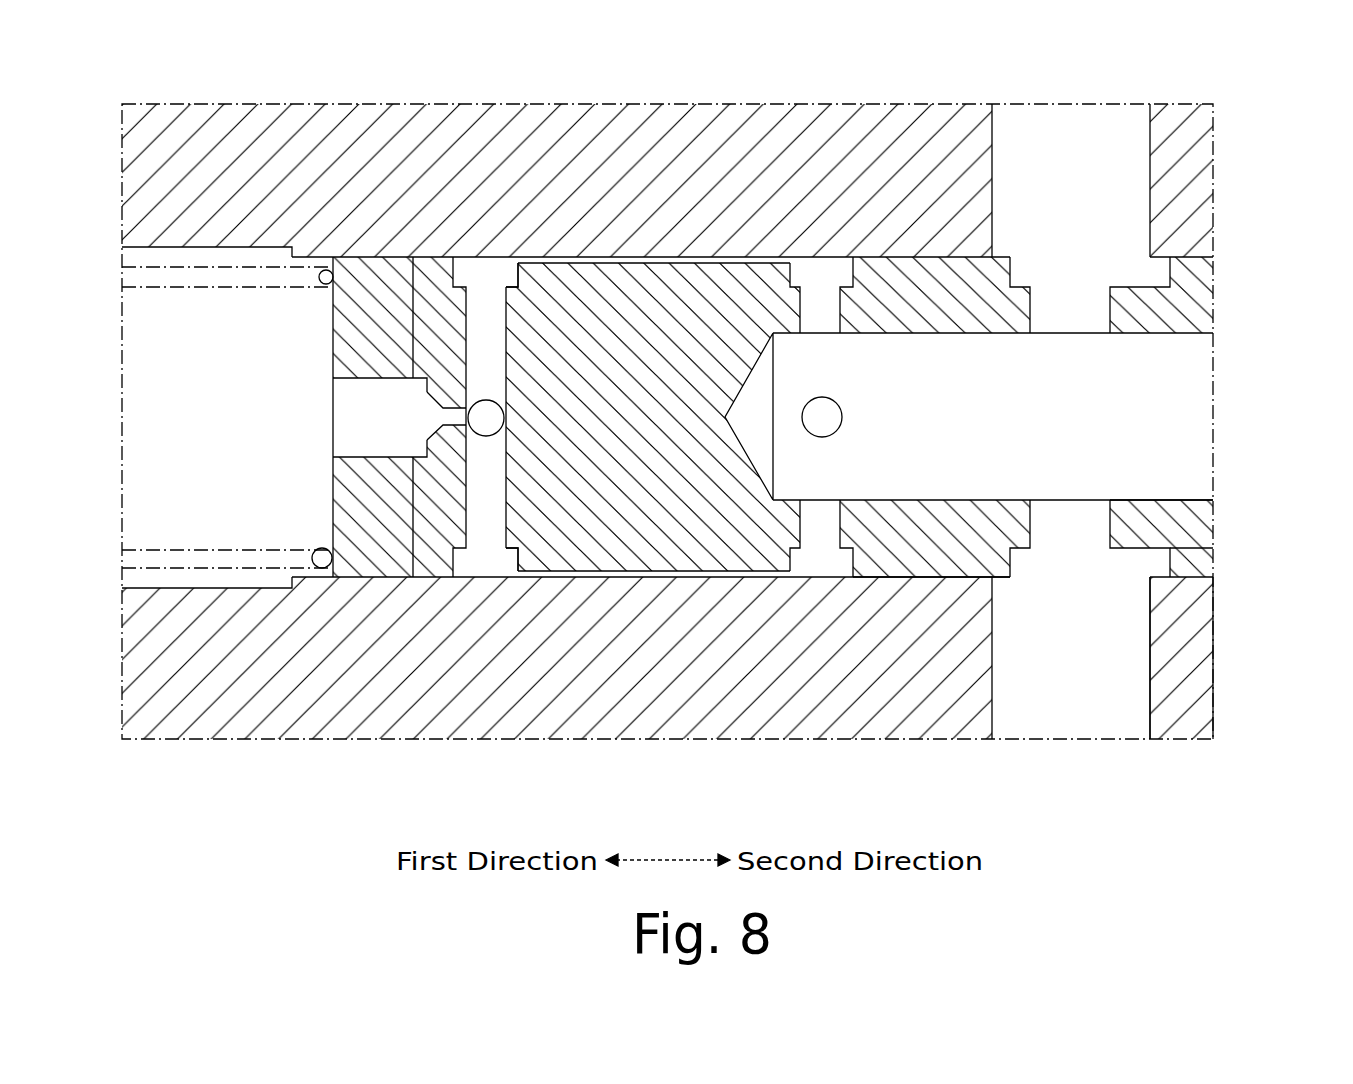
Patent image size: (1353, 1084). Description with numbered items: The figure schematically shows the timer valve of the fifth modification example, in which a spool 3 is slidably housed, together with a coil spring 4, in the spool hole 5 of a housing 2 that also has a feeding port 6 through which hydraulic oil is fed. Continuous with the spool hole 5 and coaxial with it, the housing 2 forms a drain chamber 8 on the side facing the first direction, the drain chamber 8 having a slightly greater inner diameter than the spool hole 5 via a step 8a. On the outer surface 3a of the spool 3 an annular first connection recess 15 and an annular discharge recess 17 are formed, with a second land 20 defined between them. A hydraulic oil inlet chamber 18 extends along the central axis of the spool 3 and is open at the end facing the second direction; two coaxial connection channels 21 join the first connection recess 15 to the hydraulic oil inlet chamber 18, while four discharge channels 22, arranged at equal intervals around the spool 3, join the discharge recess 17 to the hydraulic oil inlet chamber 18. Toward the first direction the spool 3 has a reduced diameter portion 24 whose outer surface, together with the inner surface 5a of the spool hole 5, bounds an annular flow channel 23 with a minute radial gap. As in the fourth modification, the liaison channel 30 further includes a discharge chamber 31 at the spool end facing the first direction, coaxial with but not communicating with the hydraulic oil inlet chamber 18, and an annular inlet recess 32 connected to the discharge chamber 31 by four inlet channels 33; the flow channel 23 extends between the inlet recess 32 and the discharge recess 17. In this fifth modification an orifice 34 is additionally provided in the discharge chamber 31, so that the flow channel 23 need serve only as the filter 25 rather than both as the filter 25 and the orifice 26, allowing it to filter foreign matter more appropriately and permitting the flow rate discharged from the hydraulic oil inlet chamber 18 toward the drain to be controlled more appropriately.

The housing 2 is at (205, 739).
The spool 3 is at (887, 566).
The outer surface 3a is at (985, 578).
The coil spring 4 is at (205, 268).
The spool hole 5 is at (1256, 561).
The inner surface 5a is at (1213, 565).
The feeding port 6 is at (1150, 707).
The drain chamber 8 is at (258, 578).
The step 8a is at (258, 250).
The first connection recess 15 is at (1137, 287).
The discharge recess 17 is at (838, 260).
The hydraulic oil inlet chamber 18 is at (1178, 470).
The second land 20 is at (930, 250).
The connection channels 21 is at (1047, 287).
The discharge channels 22 is at (826, 300).
The flow channel 23 is at (653, 305).
The reduced diameter portion 24 is at (654, 305).
The filter 25 is at (603, 163).
The orifice 26 is at (580, 257).
The liaison channel 30 is at (1158, 337).
The discharge chamber 31 is at (338, 400).
The inlet recess 32 is at (503, 285).
The inlet channels 33 is at (482, 300).
The orifice 34 is at (432, 400).